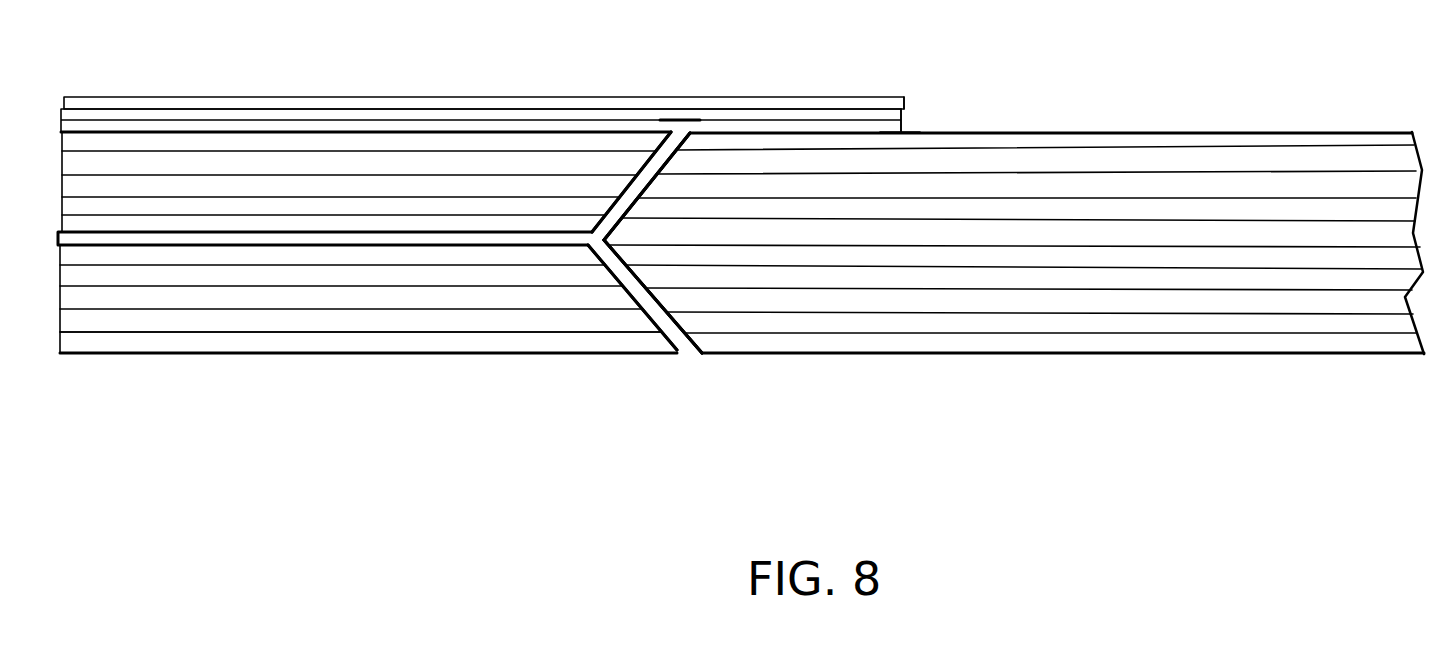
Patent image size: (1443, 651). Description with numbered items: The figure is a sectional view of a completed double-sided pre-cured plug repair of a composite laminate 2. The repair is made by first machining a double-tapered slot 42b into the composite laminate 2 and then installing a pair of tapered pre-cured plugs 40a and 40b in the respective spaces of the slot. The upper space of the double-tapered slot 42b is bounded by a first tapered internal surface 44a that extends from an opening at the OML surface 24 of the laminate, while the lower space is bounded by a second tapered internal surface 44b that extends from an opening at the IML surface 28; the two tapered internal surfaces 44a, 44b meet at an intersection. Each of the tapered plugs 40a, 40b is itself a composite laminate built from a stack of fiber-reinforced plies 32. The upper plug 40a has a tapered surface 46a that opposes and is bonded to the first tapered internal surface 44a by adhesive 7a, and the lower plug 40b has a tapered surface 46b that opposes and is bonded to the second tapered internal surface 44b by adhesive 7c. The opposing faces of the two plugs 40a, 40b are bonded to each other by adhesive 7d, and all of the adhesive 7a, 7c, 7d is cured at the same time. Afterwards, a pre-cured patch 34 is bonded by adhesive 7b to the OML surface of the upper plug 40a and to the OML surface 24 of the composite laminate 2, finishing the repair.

The composite laminate 2 is at (1168, 130).
The adhesive 7a is at (647, 173).
The adhesive 7b is at (903, 124).
The adhesive 7c is at (638, 296).
The adhesive 7d is at (430, 237).
The OML surface 24 is at (1307, 130).
The IML surface 28 is at (1330, 355).
The fiber-reinforced plies 32 is at (199, 100).
The pre-cured patch 34 is at (828, 93).
The tapered pre-cured plug 40a is at (293, 131).
The tapered pre-cured plug 40b is at (402, 354).
The double-tapered slot 42b is at (651, 185).
The first tapered internal surface 44a is at (683, 135).
The second tapered internal surface 44b is at (680, 332).
The tapered surface 46a is at (658, 144).
The tapered surface 46b is at (650, 318).